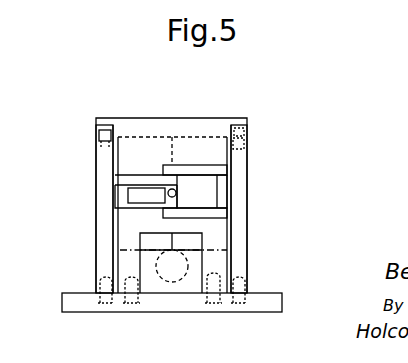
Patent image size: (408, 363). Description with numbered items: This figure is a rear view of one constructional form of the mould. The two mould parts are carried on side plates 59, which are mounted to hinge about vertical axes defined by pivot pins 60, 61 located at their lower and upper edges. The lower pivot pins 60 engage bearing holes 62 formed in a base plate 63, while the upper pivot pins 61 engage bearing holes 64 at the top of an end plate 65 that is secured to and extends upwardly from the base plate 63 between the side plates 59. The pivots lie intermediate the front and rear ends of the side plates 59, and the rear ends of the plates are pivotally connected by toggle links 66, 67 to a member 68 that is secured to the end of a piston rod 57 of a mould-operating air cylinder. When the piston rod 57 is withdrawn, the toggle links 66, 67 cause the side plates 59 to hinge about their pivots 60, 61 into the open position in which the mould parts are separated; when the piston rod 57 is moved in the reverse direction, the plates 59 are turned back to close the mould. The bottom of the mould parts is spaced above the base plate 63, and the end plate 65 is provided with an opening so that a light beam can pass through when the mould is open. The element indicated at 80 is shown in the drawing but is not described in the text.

The pivot block 57 is at (176, 193).
The upright post 59 is at (103, 203).
The base bolt 60 is at (108, 302).
The bolt 61 is at (102, 145).
The base plate 62 is at (246, 301).
The lower block 63 is at (182, 303).
The bolt 64 is at (245, 132).
The frame 65 is at (112, 117).
The upper bar 66 is at (190, 170).
The cross bar 67 is at (138, 180).
The slotted block 68 is at (165, 197).
The carriage 80 is at (202, 272).